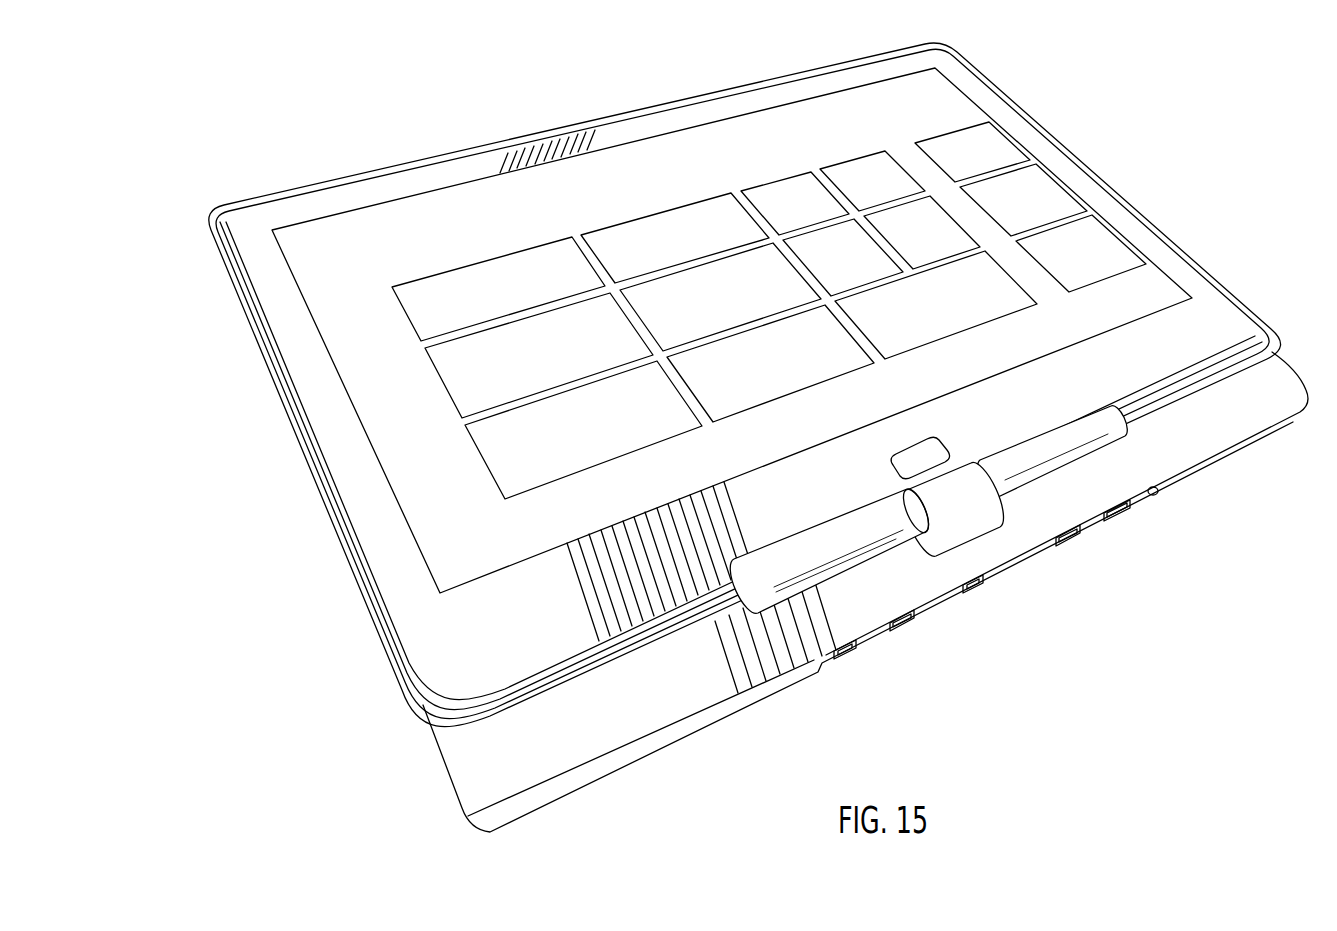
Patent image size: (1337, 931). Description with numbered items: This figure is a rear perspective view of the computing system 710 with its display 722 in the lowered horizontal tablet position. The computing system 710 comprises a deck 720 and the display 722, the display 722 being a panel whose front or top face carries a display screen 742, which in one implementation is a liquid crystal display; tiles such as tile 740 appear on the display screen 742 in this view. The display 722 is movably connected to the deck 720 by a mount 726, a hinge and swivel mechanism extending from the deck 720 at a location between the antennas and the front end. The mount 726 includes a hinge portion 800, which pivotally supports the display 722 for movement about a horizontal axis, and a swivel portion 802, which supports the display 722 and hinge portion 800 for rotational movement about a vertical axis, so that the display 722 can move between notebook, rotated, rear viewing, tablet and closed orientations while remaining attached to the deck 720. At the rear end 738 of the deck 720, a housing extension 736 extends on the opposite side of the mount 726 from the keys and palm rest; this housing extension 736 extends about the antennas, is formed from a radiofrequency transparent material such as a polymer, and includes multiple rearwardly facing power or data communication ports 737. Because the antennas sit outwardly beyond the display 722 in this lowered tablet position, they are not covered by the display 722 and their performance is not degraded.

The computing system 710 is at (1099, 150).
The deck 720 is at (758, 703).
The display 722 is at (609, 113).
The mount 726 is at (941, 560).
The housing extension 736 is at (677, 697).
The ports 737 is at (850, 648).
The rear end 738 is at (1060, 717).
The tile 740 is at (1080, 215).
The display screen 742 is at (975, 175).
The hinge portion 800 is at (916, 513).
The swivel portion 802 is at (988, 538).